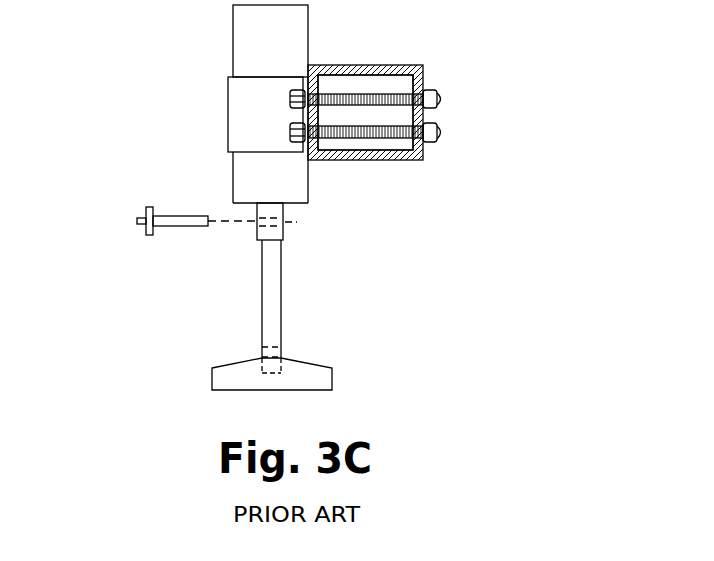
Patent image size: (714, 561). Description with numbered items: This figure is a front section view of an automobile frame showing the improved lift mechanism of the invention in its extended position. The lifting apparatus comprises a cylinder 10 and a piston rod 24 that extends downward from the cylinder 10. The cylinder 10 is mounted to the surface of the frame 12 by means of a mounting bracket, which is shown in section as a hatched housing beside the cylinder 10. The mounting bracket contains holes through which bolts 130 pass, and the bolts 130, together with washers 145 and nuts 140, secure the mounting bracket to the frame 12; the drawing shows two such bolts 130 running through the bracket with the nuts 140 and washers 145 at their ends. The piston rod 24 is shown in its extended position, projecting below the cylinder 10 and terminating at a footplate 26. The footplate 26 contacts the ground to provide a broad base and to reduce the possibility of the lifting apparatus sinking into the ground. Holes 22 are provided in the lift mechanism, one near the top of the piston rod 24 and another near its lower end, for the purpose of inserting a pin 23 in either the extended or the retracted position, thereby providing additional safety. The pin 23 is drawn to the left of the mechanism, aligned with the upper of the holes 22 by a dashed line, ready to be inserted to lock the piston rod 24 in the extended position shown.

The cylinder 10 is at (308, 43).
The frame 12 is at (425, 68).
The bolts 130 is at (365, 95).
The nuts 140 is at (428, 87).
The washers 145 is at (428, 113).
The holes 22 is at (297, 222).
The pin 23 is at (173, 215).
The piston rod 24 is at (272, 263).
The footplate 26 is at (317, 377).